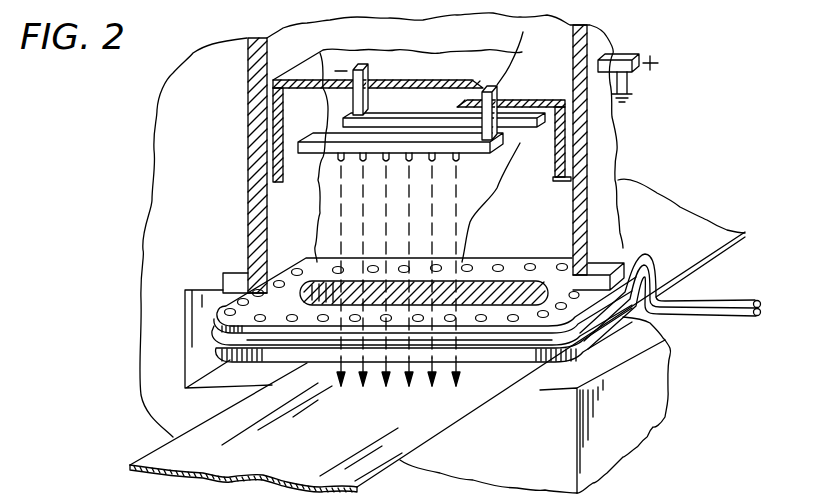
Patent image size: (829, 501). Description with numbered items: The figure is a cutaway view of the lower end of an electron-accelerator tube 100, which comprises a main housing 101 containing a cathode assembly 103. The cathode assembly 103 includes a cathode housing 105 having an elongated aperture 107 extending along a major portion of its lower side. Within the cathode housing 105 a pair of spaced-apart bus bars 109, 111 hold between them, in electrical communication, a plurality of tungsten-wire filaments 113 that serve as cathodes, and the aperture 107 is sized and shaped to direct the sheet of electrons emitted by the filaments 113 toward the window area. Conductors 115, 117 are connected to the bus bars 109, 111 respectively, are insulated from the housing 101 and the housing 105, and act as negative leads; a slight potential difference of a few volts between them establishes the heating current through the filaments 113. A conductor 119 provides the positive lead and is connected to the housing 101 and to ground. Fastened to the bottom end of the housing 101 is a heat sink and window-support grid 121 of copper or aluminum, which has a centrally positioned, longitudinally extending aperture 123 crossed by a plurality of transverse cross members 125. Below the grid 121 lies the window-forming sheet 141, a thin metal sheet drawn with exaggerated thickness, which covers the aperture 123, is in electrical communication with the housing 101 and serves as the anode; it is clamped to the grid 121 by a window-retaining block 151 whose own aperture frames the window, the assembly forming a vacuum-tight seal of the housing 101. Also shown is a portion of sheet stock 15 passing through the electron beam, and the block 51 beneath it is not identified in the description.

The electron-accelerator tube 100 is at (247, 123).
The main housing 101 is at (250, 252).
The cathode assembly 103 is at (325, 63).
The cathode housing 105 is at (557, 74).
The elongated aperture 107 is at (496, 152).
The bus bar 109 is at (350, 116).
The bus bar 111 is at (466, 238).
The tungsten-wire filaments 113 is at (385, 163).
The conductor 115 is at (372, 66).
The conductor 117 is at (496, 88).
The conductor 119 is at (638, 58).
The heat sink and window-support grid 121 is at (650, 253).
The aperture 123 is at (218, 315).
The cross members 125 is at (475, 268).
The window-forming sheet 141 is at (494, 360).
The window-retaining block 151 is at (233, 362).
The sheet stock 15 is at (170, 453).
The support block 51 is at (643, 408).